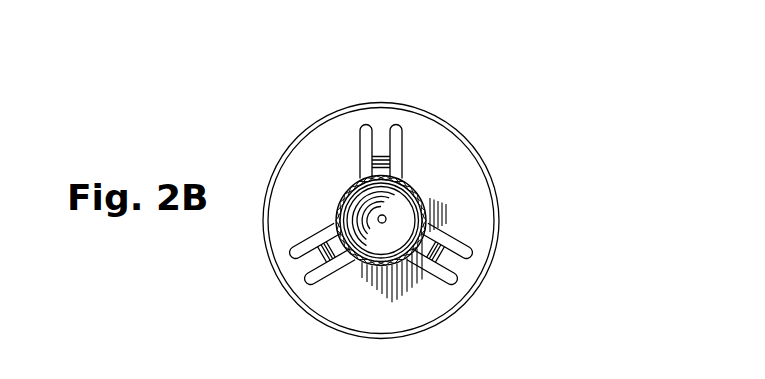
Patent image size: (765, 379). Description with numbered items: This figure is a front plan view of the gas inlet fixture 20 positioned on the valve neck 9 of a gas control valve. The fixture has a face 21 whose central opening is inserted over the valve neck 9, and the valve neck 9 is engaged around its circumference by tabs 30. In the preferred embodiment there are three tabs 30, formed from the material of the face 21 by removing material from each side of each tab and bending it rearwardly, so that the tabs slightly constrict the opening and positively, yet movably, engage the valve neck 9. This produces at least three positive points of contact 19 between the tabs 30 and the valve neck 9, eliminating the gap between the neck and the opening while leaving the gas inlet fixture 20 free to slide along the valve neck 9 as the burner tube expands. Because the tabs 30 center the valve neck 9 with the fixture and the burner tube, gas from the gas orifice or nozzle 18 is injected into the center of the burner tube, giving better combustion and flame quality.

The gas inlet fixture 20 is at (252, 258).
The face 21 is at (499, 237).
The valve neck 9 is at (427, 199).
The gas orifice or nozzle 18 is at (386, 216).
The points of contact 19 is at (398, 158).
The tabs 30 is at (378, 168).